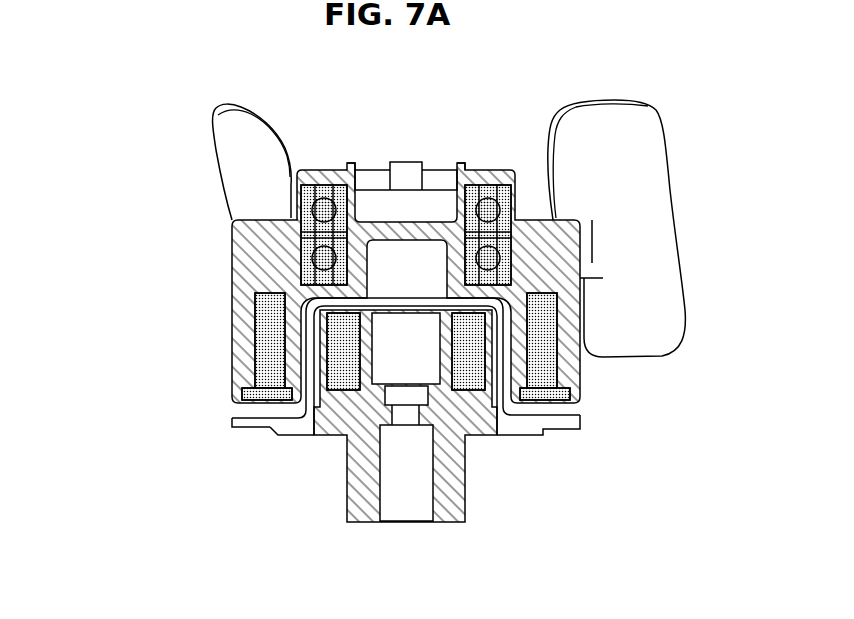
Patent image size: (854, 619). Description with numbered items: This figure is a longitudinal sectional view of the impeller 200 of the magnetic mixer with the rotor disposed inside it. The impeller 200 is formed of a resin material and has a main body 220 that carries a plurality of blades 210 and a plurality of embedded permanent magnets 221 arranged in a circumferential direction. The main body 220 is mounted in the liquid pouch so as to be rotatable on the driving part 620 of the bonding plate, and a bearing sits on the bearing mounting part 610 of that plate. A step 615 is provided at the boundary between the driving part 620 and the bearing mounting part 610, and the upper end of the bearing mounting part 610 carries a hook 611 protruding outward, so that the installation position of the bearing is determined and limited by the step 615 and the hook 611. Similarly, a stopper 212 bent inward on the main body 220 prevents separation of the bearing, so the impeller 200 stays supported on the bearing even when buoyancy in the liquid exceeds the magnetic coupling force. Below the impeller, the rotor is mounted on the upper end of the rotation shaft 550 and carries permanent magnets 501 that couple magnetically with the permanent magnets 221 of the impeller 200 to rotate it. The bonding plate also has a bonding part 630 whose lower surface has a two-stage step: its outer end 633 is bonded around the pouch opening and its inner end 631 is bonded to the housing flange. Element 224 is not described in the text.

The impeller 200 is at (120, 200).
The blades 210 is at (240, 173).
The main body 220 is at (247, 253).
The permanent magnets 221 is at (265, 334).
The yoke 224 is at (237, 393).
The stopper 212 is at (317, 168).
The bearing mounting part 610 is at (382, 181).
The hook 611 is at (464, 164).
The step 615 is at (560, 255).
The driving part 620 is at (579, 403).
The bonding part 630 is at (249, 483).
The inner end 631 is at (273, 430).
The outer end 633 is at (232, 428).
The permanent magnets 501 is at (496, 436).
The rotation shaft 550 is at (455, 494).